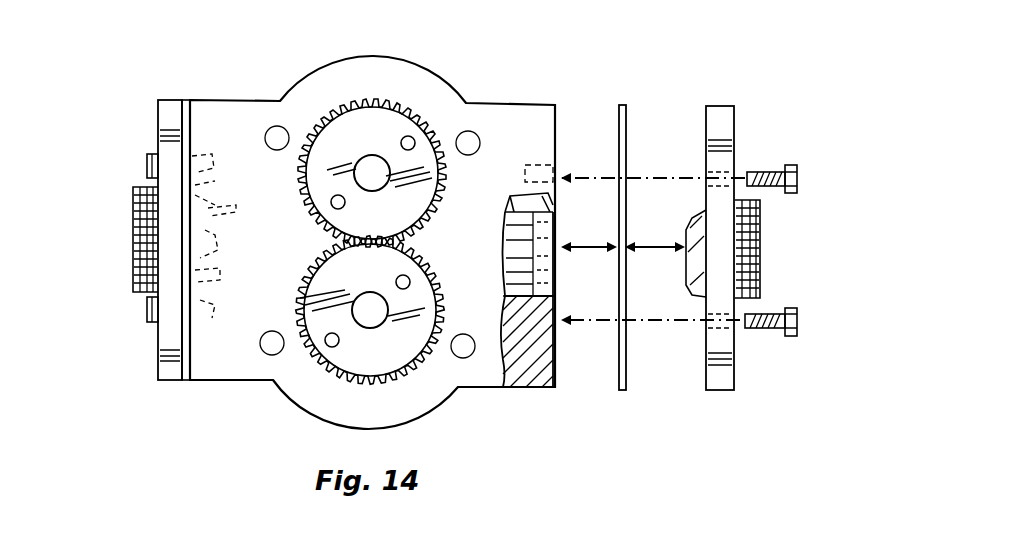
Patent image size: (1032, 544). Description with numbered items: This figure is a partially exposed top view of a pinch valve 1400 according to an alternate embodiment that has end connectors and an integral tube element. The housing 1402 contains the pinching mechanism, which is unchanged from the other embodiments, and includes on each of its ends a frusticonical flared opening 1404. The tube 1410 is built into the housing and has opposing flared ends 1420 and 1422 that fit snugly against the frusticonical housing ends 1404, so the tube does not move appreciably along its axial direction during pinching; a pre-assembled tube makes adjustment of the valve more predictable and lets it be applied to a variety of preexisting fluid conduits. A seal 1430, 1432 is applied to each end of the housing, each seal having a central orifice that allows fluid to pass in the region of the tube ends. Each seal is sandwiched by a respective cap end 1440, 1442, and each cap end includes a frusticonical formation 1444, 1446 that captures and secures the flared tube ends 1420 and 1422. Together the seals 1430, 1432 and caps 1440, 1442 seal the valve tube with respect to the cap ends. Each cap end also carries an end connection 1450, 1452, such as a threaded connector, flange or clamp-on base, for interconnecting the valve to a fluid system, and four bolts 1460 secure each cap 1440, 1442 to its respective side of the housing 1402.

The valve 1400 is at (512, 82).
The housing 1402 is at (405, 77).
The frusticonical flared openings 1404 is at (533, 387).
The tube 1410 is at (500, 387).
The flared end 1420 is at (553, 208).
The flared end 1422 is at (222, 190).
The seal 1430 is at (623, 105).
The seal 1432 is at (188, 100).
The cap end 1440 is at (720, 108).
The cap end 1442 is at (162, 100).
The frusticonical formation 1444 is at (696, 216).
The frusticonical formation 1446 is at (218, 246).
The end connection 1450 is at (760, 293).
The end connection 1452 is at (136, 292).
The bolts 1460 is at (147, 166).